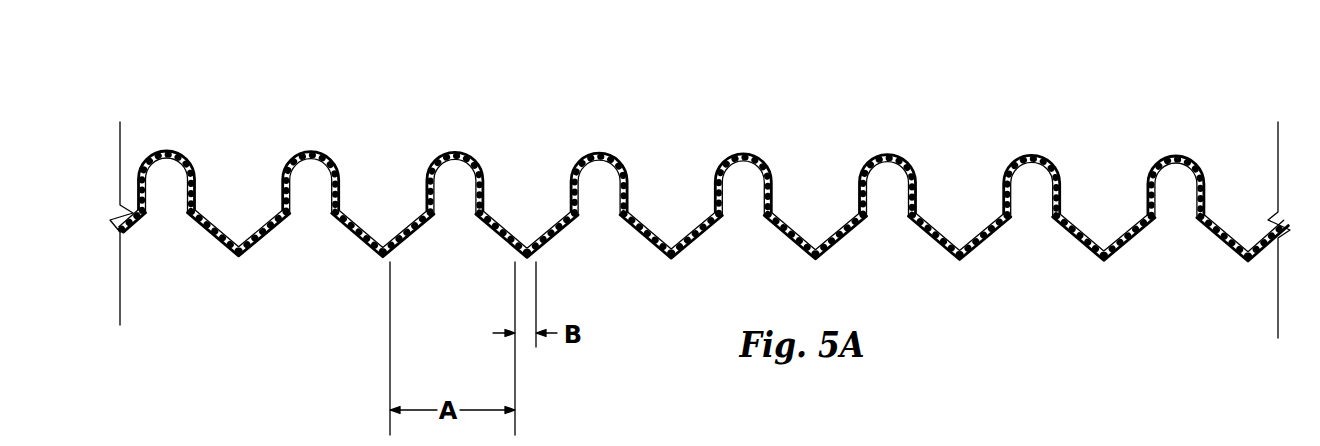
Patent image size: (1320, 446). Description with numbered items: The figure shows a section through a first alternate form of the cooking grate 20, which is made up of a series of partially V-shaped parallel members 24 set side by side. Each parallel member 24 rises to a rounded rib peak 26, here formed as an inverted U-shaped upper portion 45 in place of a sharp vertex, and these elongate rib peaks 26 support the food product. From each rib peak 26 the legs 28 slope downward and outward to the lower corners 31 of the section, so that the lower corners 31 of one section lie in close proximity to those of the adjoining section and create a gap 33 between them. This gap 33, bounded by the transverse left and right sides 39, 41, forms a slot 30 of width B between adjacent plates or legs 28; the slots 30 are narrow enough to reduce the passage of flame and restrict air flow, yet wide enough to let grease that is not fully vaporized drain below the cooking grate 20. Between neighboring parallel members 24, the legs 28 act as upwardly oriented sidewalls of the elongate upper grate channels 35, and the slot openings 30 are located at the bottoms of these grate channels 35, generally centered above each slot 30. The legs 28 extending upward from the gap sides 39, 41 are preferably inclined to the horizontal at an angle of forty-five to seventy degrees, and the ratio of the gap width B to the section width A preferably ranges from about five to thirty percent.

The cooking grate 20 is at (252, 144).
The parallel members 24 is at (917, 213).
The rib peak 26 is at (313, 152).
The legs 28 is at (351, 223).
The slots 30 is at (360, 240).
The lower corners 31 is at (813, 262).
The gap 33 is at (384, 263).
The grate channels 35 is at (653, 201).
The left side of gap 39 is at (1101, 263).
The right side of gap 41 is at (1106, 263).
The inverted U-shaped upper portion 45 is at (626, 172).